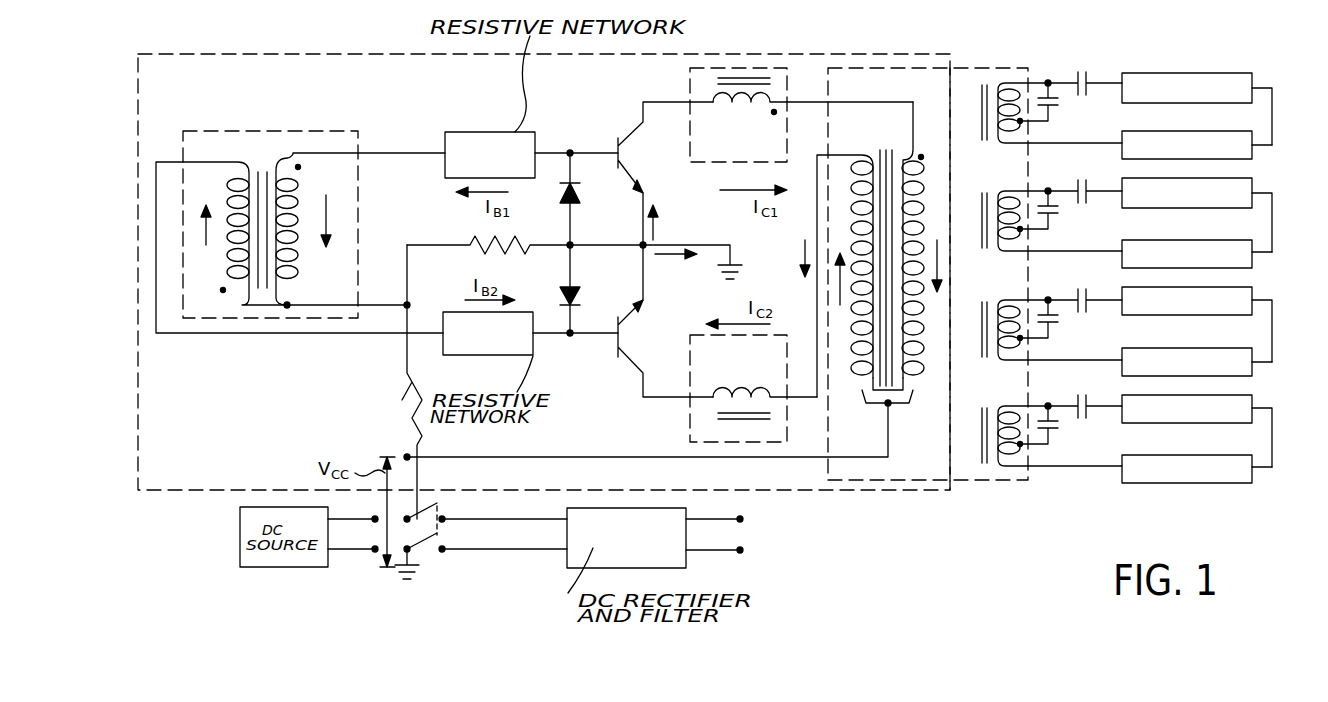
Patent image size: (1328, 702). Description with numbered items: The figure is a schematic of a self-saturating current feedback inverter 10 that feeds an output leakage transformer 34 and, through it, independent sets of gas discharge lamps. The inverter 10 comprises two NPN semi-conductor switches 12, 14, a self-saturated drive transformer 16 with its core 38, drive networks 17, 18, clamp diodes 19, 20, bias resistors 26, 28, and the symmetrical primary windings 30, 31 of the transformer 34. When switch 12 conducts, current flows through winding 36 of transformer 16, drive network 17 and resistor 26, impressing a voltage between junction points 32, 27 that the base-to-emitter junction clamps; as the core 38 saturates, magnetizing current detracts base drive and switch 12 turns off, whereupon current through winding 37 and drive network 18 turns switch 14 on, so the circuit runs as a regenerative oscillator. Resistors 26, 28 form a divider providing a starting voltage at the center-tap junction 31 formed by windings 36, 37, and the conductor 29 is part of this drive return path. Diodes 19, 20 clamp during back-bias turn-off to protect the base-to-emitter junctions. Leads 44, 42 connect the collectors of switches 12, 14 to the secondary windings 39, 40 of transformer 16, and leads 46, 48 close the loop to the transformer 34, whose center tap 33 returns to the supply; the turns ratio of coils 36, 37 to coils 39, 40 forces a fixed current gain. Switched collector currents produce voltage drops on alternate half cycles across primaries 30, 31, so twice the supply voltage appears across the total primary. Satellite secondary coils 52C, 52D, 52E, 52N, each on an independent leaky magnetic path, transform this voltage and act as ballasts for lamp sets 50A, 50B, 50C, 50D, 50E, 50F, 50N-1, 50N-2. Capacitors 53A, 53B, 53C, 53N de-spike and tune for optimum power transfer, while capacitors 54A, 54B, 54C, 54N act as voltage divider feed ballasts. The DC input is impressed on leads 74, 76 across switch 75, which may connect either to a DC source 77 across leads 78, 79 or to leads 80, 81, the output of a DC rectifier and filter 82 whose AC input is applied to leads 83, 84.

The self-saturating current feedback inverter 10 is at (945, 56).
The semi-conductor switch 12 is at (616, 128).
The semi-conductor switch 14 is at (615, 358).
The self-saturated transformer 16 is at (226, 132).
The drive network 17 is at (465, 132).
The drive network 18 is at (460, 356).
The clamp diode 19 is at (582, 296).
The clamp diode 20 is at (578, 195).
The bias resistor 26 is at (486, 241).
The junction point 27 is at (570, 150).
The bias resistor 28 is at (402, 412).
The conductor 29 is at (362, 333).
The primary winding 30 is at (392, 152).
The primary winding 31 is at (925, 168).
The junction point 32 is at (632, 250).
The center tap conductor 33 is at (888, 418).
The output leakage transformer 34 is at (1028, 72).
The winding 36 is at (300, 190).
The winding 37 is at (244, 183).
The core 38 is at (253, 140).
The secondary winding 39 is at (787, 88).
The secondary winding 40 is at (775, 412).
The lead 42 is at (650, 400).
The lead 44 is at (662, 100).
The lead 46 is at (790, 104).
The lead 48 is at (782, 400).
The gas discharge lamp 50A is at (1255, 75).
The gas discharge lamp 50B is at (1255, 150).
The gas discharge lamp 50C is at (1255, 180).
The gas discharge lamp 50D is at (1255, 260).
The gas discharge lamp 50E is at (1255, 290).
The gas discharge lamp 50F is at (1255, 370).
The gas discharge lamp 50N-1 is at (1255, 398).
The gas discharge lamp 50N-2 is at (1240, 485).
The secondary coil 52C is at (1007, 88).
The secondary coil 52D is at (1021, 180).
The secondary coil 52E is at (1021, 290).
The secondary coil 52N is at (1022, 382).
The capacitor 53A is at (1058, 108).
The capacitor 53B is at (1058, 216).
The capacitor 53C is at (1058, 325).
The capacitor 53N is at (1058, 431).
The capacitor 54A is at (1090, 88).
The capacitor 54B is at (1090, 196).
The capacitor 54C is at (1090, 306).
The capacitor 54N is at (1090, 411).
The lead 74 is at (425, 507).
The switch 75 is at (443, 537).
The lead 76 is at (425, 562).
The DC source 77 is at (240, 530).
The lead 78 is at (360, 519).
The lead 79 is at (362, 552).
The lead 80 is at (503, 518).
The lead 81 is at (492, 553).
The DC rectifier and filter 82 is at (622, 569).
The lead 83 is at (716, 518).
The lead 84 is at (720, 556).